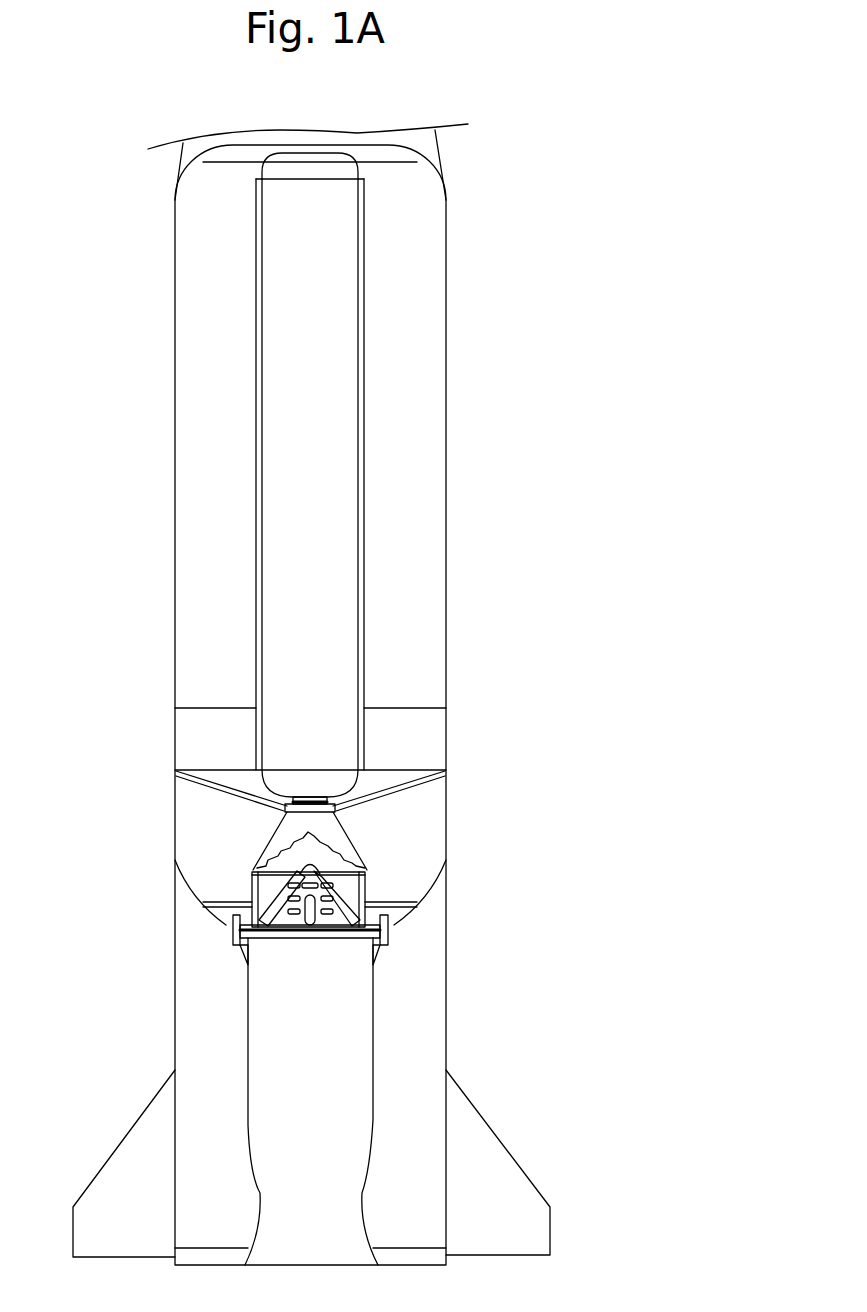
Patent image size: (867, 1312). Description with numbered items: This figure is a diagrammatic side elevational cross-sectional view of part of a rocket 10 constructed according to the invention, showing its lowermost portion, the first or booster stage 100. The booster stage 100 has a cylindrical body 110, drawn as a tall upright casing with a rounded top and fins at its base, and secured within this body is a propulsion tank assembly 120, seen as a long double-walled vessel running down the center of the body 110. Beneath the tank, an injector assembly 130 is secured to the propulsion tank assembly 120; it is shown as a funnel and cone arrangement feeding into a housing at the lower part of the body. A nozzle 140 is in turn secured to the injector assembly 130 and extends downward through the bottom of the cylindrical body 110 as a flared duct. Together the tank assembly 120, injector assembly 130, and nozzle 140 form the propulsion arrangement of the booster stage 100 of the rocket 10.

The rocket 10 is at (619, 409).
The booster stage 100 is at (468, 605).
The cylindrical body 110 is at (174, 260).
The propulsion tank assembly 120 is at (187, 888).
The injector assembly 130 is at (290, 845).
The nozzle 140 is at (248, 1132).